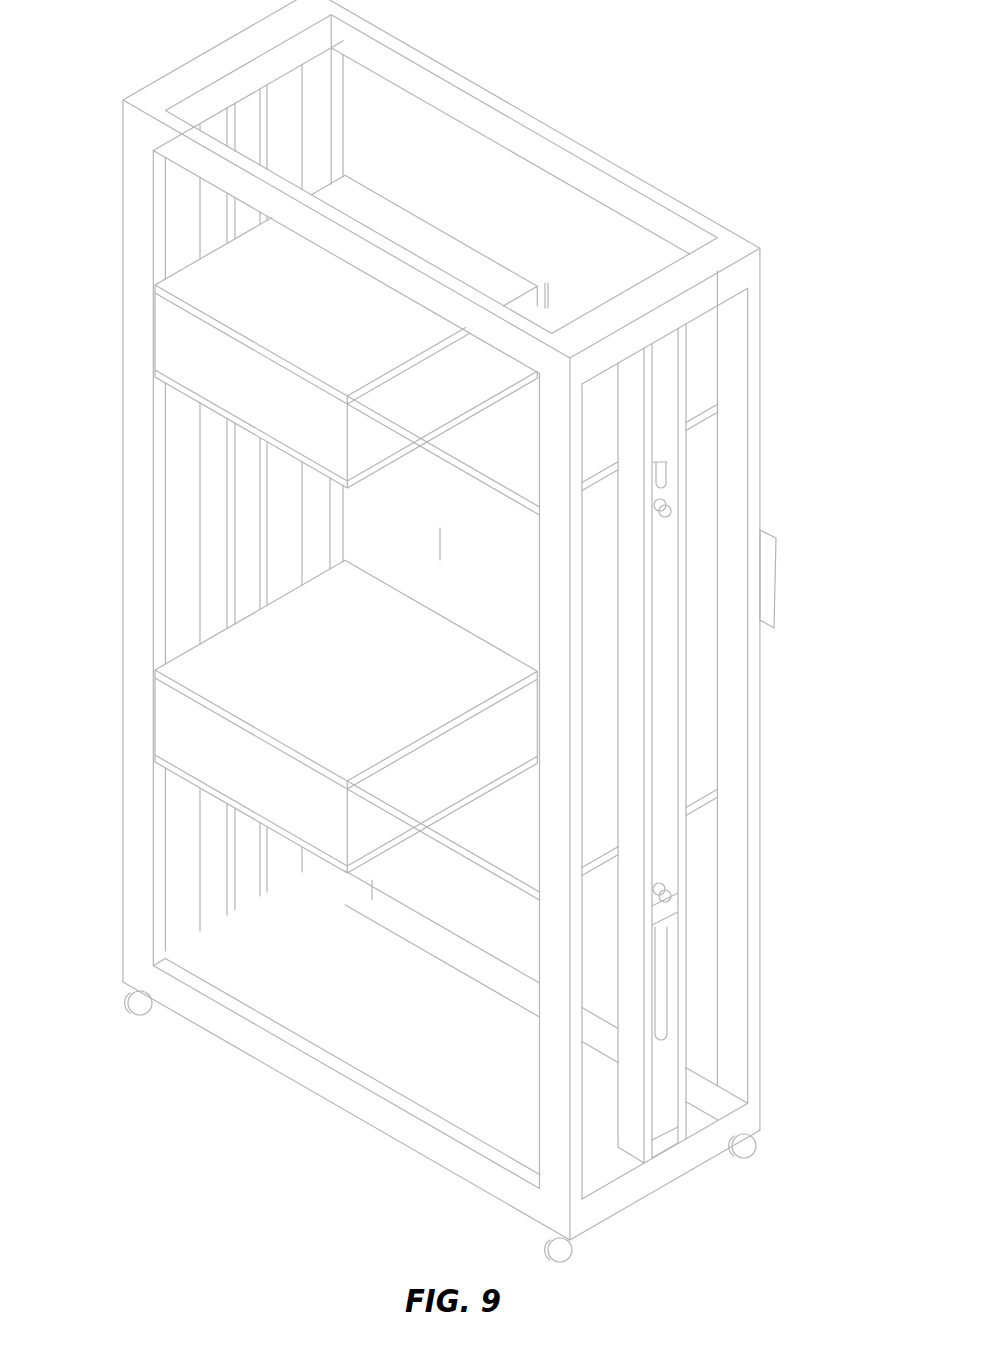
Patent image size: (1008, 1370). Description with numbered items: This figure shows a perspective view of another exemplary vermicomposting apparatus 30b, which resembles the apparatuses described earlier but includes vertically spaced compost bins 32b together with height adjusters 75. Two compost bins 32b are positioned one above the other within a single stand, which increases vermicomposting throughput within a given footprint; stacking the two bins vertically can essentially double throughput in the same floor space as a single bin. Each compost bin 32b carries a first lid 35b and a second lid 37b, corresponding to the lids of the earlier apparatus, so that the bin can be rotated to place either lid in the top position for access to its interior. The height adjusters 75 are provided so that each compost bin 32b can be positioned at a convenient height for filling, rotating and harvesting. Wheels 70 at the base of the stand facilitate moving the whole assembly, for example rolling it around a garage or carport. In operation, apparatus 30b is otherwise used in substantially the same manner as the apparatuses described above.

The vermicomposting apparatus 30b is at (572, 85).
The compost bin 32b is at (440, 215).
The first lid 35b is at (547, 300).
The second lid 37b is at (440, 528).
The wheels 70 is at (128, 1000).
The height adjusters 75 is at (672, 448).